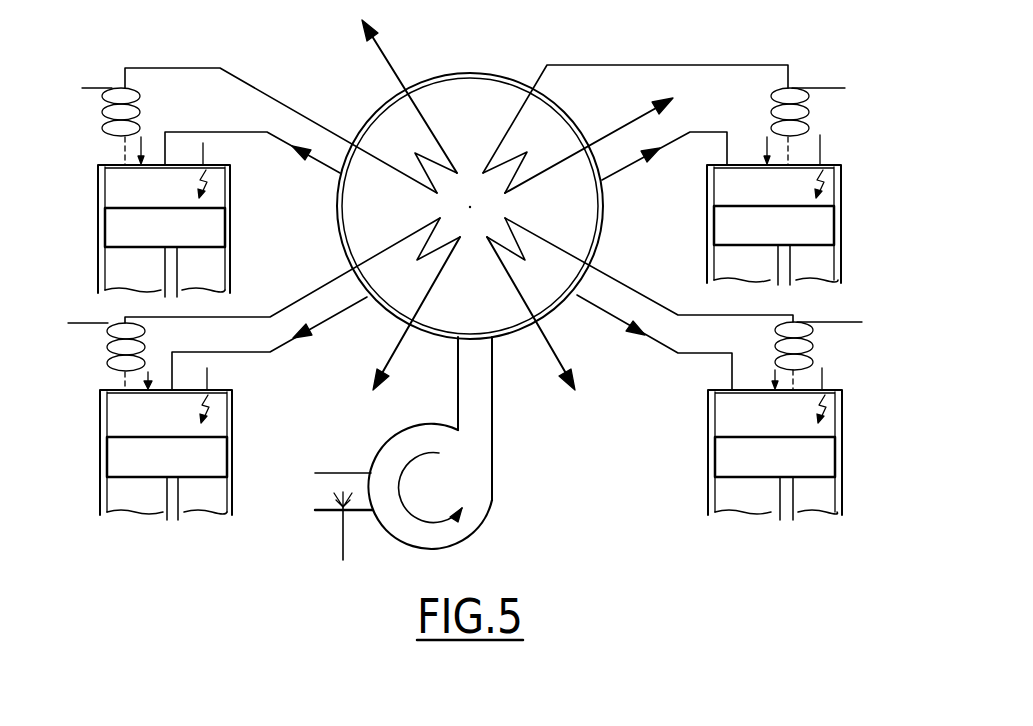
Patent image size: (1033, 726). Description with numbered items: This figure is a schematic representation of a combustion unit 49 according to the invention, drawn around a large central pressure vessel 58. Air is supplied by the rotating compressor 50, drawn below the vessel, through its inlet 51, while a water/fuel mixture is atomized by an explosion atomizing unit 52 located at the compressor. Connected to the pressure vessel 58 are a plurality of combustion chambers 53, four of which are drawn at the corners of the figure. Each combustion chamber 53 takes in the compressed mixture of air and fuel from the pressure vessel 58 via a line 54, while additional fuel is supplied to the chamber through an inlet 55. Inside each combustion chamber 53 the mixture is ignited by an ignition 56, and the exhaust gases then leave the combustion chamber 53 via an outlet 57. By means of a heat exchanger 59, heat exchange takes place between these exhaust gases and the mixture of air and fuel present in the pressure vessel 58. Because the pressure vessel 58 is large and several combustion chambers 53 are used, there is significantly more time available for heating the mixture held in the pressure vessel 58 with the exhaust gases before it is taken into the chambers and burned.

The combustion unit 49 is at (674, 52).
The rotating compressor 50 is at (487, 497).
The inlet 51 is at (338, 473).
The explosion atomizing unit 52 is at (343, 522).
The combustion chamber 53 is at (116, 265).
The line 54 is at (233, 132).
The inlet 55 is at (113, 86).
The ignition 56 is at (203, 148).
The outlet 57 is at (224, 32).
The pressure vessel 58 is at (475, 88).
The heat exchanger 59 is at (387, 168).